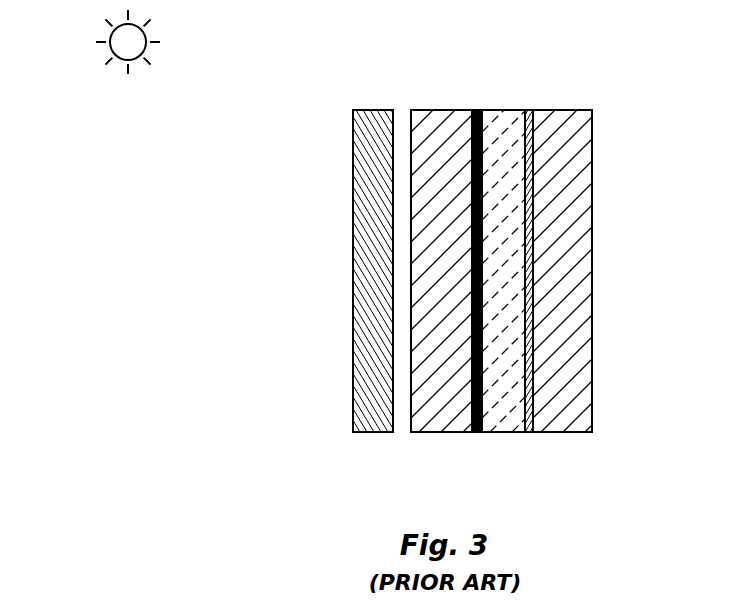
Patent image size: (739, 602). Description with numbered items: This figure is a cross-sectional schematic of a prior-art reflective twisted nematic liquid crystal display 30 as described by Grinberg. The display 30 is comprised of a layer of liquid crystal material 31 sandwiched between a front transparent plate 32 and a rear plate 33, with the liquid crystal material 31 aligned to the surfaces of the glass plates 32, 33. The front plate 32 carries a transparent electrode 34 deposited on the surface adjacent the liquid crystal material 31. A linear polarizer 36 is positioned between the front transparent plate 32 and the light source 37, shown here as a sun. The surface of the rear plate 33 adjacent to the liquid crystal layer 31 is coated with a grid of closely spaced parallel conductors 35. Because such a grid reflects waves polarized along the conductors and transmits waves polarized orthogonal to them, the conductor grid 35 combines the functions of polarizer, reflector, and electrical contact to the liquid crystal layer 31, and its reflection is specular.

The reflective twisted nematic liquid crystal display 30 is at (329, 65).
The layer of liquid crystal material 31 is at (512, 109).
The front transparent plate 32 is at (445, 109).
The rear plate 33 is at (563, 109).
The transparent electrode 34 is at (480, 433).
The grid of closely spaced parallel conductors 35 is at (530, 433).
The linear polarizer 36 is at (375, 433).
The light source 37 is at (119, 58).